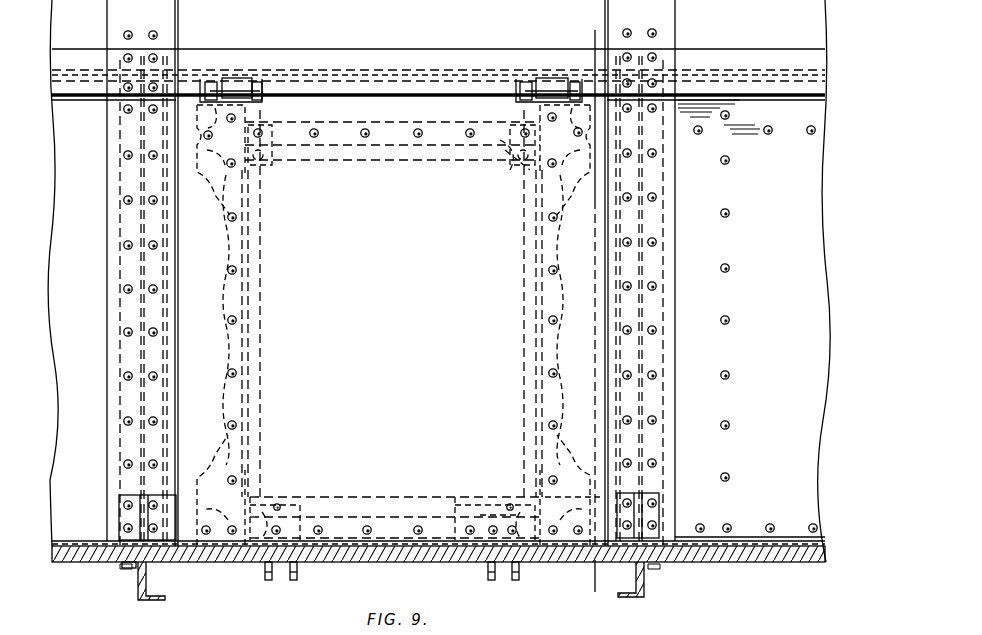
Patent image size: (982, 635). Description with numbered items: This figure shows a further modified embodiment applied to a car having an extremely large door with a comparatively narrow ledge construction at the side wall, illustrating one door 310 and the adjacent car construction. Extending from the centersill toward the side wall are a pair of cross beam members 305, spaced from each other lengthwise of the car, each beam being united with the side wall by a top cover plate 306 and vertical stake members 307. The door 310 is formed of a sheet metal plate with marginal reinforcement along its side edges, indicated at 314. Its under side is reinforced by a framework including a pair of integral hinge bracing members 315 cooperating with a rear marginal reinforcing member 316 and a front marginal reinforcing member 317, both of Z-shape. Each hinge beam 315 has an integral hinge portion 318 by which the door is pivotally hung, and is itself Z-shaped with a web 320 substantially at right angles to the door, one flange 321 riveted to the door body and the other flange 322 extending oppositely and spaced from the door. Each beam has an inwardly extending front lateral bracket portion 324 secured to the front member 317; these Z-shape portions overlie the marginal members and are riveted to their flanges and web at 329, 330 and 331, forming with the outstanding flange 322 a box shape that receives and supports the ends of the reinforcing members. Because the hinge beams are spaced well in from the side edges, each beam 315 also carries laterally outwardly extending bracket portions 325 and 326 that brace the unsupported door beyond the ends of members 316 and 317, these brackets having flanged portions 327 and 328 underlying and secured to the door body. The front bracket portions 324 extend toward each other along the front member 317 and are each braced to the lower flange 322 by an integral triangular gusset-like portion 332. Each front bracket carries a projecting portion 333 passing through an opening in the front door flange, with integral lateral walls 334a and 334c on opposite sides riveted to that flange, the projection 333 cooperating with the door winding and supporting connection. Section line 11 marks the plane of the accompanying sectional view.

The section line 11 is at (607, 30).
The cross beam member 305 is at (172, 62).
The top cover plate 306 is at (107, 370).
The vertical stake member 307 is at (640, 598).
The door 310 is at (393, 303).
The side edge marginal reinforcement 314 is at (176, 563).
The hinge bracing member 315 is at (318, 88).
The rear marginal reinforcing member 316 is at (385, 140).
The front marginal reinforcing member 317 is at (380, 548).
The hinge portion 318 is at (262, 82).
The web 320 is at (205, 563).
The flange 321 is at (535, 560).
The flange 322 is at (330, 135).
The front lateral bracket portion 324 is at (345, 548).
The laterally outwardly extending bracket portion 325 is at (218, 160).
The laterally outwardly extending bracket portion 326 is at (207, 600).
The flanged portion 327 is at (232, 80).
The flanged portion 328 is at (202, 525).
The rivets 329 is at (462, 82).
The rivets 330 is at (522, 168).
The rivets 331 is at (268, 80).
The triangular gusset-like portion 332 is at (275, 498).
The projecting portion 333 is at (266, 584).
The lateral wall 334a is at (440, 563).
The lateral wall 334c is at (585, 548).